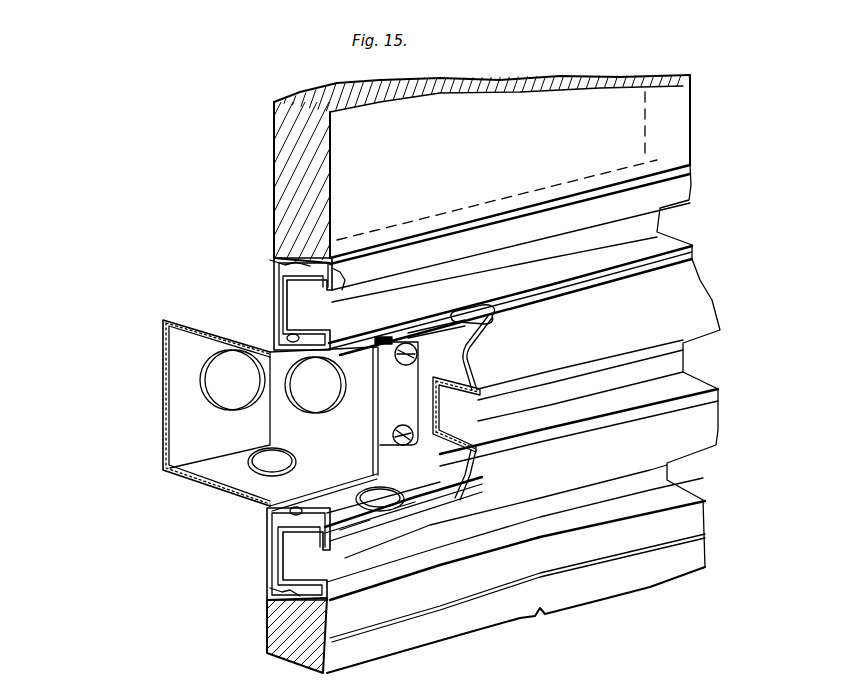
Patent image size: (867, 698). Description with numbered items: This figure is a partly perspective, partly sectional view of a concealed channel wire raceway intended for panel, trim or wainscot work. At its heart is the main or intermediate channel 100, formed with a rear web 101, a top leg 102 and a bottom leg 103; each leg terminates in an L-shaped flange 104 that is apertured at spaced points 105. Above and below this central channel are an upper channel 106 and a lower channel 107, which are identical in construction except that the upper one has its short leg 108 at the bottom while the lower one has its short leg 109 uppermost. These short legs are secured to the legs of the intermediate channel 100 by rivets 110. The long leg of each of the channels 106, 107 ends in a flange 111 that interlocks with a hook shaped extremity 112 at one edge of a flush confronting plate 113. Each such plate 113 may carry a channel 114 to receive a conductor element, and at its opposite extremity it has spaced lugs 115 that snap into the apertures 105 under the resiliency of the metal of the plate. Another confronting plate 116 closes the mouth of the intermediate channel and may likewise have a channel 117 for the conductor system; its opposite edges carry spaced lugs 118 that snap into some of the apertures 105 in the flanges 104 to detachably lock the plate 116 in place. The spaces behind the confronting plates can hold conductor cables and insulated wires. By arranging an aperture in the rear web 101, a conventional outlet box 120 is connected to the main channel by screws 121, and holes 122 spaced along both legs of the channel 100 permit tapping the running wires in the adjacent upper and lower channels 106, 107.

The main or intermediate channel 100 is at (437, 455).
The rear web 101 is at (445, 358).
The top leg 102 is at (310, 358).
The bottom leg 103 is at (327, 508).
The L-shaped flange 104 is at (352, 522).
The apertures 105 is at (400, 517).
The upper channel 106 is at (275, 262).
The lower channel 107 is at (267, 548).
The short leg 108 is at (329, 336).
The short leg 109 is at (267, 527).
The rivets 110 is at (294, 333).
The flanges 111 is at (345, 275).
The hook shaped extremities 112 is at (273, 273).
The flush confronting plates 113 is at (673, 190).
The channel 114 is at (657, 221).
The spaced lugs 115 is at (395, 360).
The confronting plate 116 is at (683, 310).
The channel 117 is at (667, 360).
The spaced lugs 118 is at (493, 322).
The outlet box 120 is at (163, 380).
The screws 121 is at (423, 351).
The holes 122 is at (403, 487).